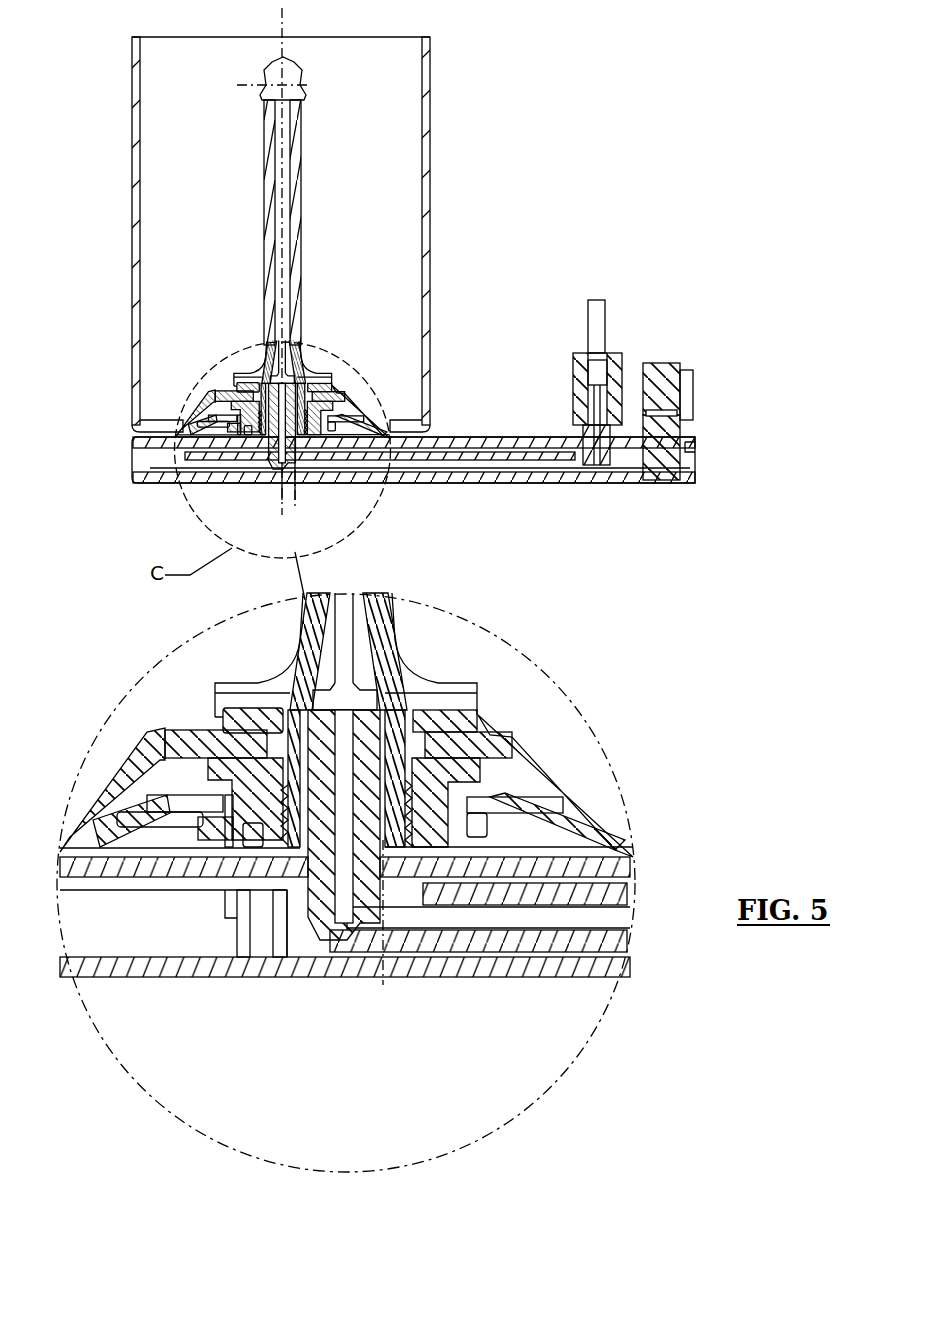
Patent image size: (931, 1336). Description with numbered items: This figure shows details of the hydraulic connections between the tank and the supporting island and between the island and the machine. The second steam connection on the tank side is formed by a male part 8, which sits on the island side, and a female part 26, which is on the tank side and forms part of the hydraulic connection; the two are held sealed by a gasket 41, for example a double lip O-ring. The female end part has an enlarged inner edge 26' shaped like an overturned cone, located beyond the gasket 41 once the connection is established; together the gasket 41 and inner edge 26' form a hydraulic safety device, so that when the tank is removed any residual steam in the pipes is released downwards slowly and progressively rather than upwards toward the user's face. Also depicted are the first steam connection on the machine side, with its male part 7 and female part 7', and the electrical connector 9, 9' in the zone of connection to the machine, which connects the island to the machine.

The male part of first steam connection 7 is at (606, 471).
The female part of first steam connection 7' is at (573, 345).
The connector 9 is at (686, 484).
The connector 9' is at (668, 355).
The female part of second steam connection 26 is at (351, 707).
The female end part inner edge 26' is at (473, 819).
The gasket 41 is at (367, 750).
The male part of second steam connection 8 is at (320, 897).